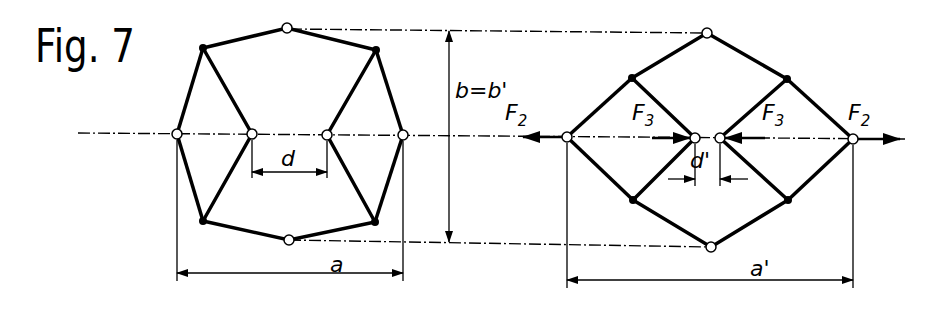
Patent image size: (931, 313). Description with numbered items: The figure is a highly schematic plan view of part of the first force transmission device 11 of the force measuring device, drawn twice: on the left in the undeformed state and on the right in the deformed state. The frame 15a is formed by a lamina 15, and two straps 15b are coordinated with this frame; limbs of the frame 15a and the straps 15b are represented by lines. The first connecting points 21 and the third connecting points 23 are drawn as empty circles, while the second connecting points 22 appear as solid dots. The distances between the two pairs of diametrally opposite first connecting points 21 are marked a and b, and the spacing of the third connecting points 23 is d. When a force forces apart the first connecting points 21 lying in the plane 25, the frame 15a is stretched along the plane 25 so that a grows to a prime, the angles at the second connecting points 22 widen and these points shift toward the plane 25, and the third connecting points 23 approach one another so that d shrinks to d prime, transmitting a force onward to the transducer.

The first force transmission device 11 is at (229, 39).
The lamina 15 is at (478, 150).
The frame 15a is at (190, 181).
The straps 15b is at (228, 88).
The first connecting points 21 is at (283, 24).
The second connecting points 22 is at (201, 49).
The third connecting points 23 is at (322, 133).
The plane 25 is at (150, 141).